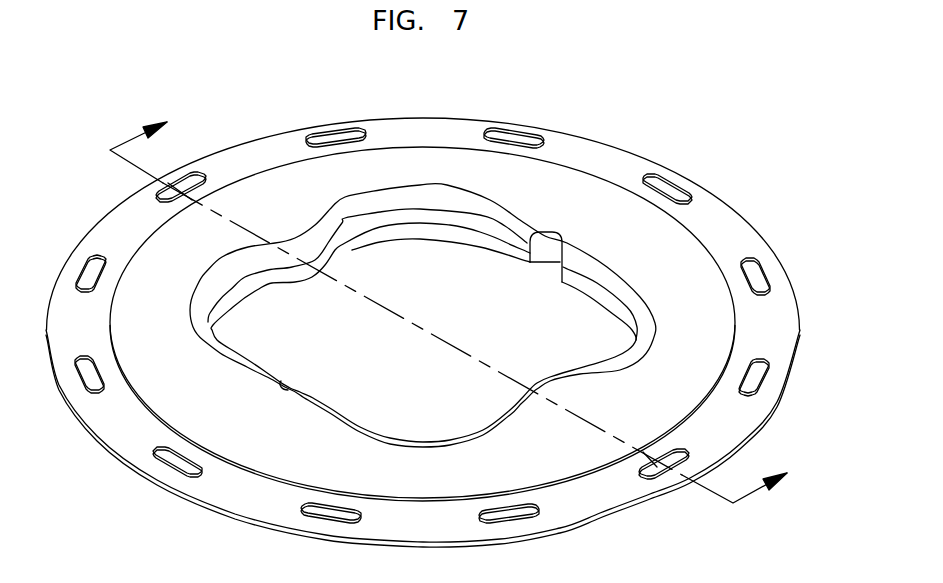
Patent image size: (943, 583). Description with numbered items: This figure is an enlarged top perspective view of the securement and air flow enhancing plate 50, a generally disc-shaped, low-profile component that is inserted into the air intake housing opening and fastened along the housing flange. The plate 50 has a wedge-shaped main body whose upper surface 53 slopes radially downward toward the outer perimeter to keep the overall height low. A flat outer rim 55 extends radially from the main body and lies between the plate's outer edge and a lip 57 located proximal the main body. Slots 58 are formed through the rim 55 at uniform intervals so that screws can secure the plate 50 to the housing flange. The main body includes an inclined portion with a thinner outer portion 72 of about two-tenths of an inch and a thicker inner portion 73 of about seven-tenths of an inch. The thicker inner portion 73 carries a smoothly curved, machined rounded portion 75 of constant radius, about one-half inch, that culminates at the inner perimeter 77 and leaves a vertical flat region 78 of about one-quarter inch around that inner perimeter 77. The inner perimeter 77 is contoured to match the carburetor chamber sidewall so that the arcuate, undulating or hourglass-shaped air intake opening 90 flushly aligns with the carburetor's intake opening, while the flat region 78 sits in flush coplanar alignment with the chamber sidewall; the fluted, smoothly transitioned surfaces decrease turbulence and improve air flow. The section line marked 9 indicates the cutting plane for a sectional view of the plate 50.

The securement and air flow enhancing plate 50 is at (730, 157).
The upper surface 53 is at (723, 228).
The flat outer rim 55 is at (590, 152).
The lip 57 is at (492, 125).
The slots 58 is at (495, 140).
The thinner outer portion 72 is at (262, 182).
The thicker inner portion 73 is at (283, 222).
The rounded portion 75 is at (430, 207).
The inner perimeter 77 is at (403, 212).
The vertical flat region 78 is at (363, 227).
The air intake opening 90 is at (528, 320).
The section line 9- 9 is at (459, 299).